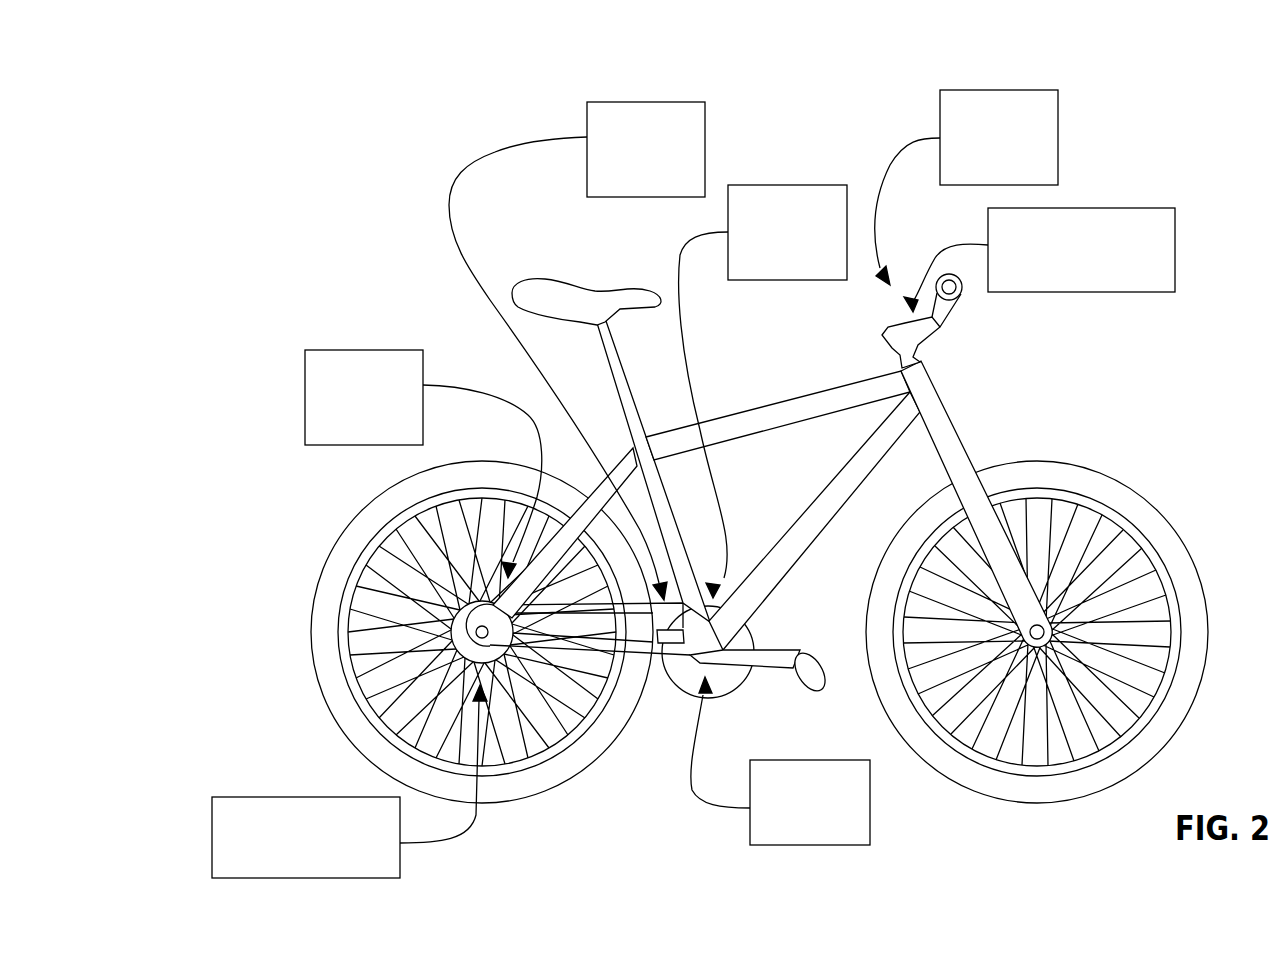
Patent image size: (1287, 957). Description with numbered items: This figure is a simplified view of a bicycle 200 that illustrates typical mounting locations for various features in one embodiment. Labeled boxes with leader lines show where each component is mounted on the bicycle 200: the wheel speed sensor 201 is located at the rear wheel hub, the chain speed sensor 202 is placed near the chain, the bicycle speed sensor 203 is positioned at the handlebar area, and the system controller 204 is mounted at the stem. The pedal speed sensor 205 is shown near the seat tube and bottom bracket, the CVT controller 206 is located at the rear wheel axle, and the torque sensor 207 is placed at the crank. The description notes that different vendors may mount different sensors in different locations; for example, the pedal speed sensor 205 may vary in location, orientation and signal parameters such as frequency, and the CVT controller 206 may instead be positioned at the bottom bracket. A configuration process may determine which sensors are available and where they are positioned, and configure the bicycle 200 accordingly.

The bicycle 200 is at (221, 165).
The wheel speed sensor 201 is at (305, 397).
The chain speed sensor 202 is at (705, 138).
The bicycle speed sensor 203 is at (1058, 138).
The system controller 204 is at (1105, 292).
The pedal speed sensor 205 is at (823, 185).
The CVT controller 206 is at (268, 797).
The torque sensor 207 is at (870, 807).